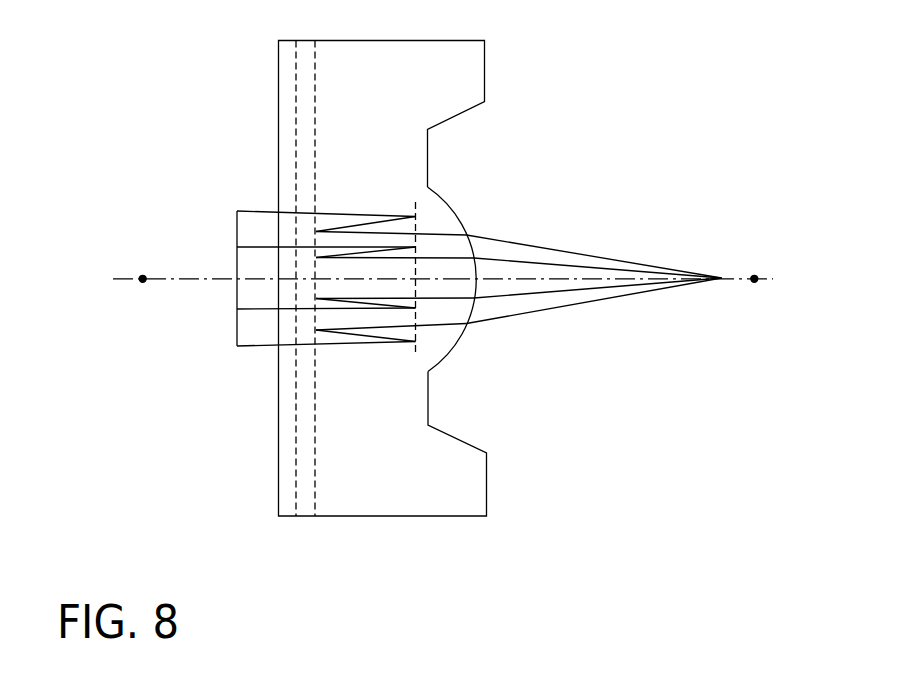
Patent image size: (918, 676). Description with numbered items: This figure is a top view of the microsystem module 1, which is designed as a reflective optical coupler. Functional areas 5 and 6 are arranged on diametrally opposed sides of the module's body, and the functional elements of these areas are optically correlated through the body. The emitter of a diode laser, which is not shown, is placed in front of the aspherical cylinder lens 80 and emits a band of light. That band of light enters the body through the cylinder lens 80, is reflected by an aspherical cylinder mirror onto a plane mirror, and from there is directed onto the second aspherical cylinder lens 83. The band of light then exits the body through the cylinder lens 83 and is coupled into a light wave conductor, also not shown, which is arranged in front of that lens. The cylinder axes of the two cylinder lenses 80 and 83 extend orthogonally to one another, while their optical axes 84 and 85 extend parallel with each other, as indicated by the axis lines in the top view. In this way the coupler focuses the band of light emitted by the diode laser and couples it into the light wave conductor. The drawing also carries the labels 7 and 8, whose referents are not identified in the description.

The microsystem module 1 is at (632, 82).
The functional area 5 is at (95, 261).
The functional area 6 is at (632, 187).
The first layer plane 7 is at (287, 157).
The body portions 8 is at (475, 58).
The aspherical cylinder lens 80 is at (310, 461).
The second aspherical cylinder lens 83 is at (462, 225).
The optical axis 84 is at (143, 279).
The optical axis 85 is at (754, 278).